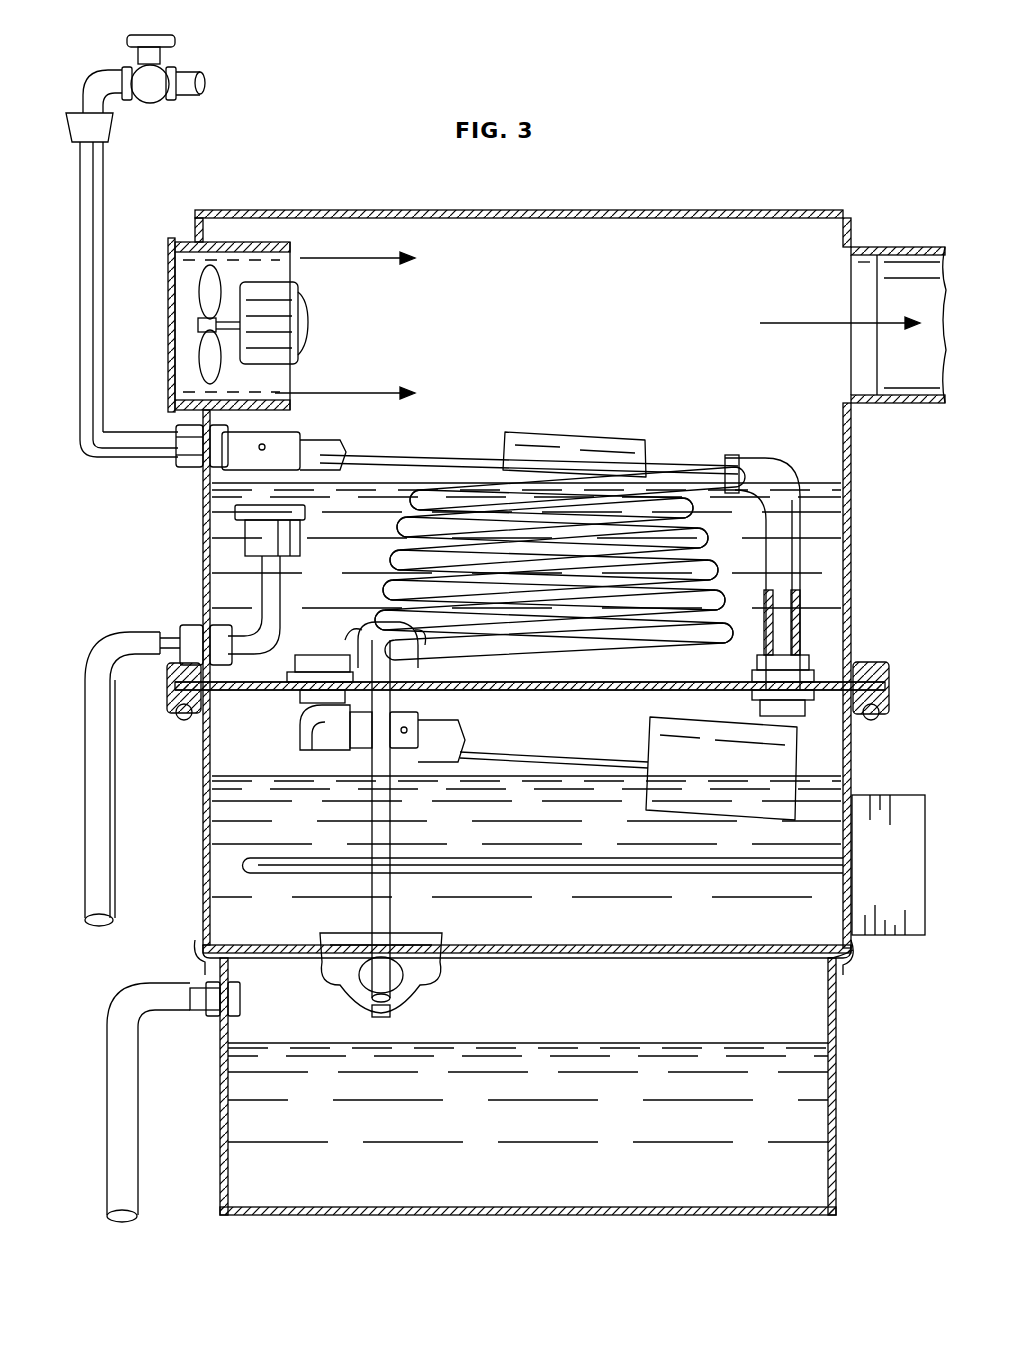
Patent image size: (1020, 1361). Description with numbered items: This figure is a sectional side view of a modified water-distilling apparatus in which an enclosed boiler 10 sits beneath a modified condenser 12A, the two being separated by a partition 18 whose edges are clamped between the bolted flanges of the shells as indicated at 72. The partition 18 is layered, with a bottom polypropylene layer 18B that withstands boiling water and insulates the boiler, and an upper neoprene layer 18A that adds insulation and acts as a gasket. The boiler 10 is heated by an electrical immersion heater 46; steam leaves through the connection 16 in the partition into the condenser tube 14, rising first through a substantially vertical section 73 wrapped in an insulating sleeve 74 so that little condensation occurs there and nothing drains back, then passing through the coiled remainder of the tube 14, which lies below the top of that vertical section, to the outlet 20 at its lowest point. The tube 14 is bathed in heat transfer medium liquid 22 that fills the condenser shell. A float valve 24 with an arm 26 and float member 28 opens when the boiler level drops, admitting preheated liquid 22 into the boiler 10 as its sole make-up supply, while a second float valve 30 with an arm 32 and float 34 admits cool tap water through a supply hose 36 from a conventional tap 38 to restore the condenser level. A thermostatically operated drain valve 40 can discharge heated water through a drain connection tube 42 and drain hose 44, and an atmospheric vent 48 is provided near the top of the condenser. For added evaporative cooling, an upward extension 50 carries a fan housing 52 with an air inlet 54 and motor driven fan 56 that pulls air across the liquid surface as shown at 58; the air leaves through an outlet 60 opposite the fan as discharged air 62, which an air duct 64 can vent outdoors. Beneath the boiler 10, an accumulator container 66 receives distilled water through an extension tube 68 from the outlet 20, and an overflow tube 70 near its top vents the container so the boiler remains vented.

The boiler 10 is at (203, 815).
The modified condenser 12A is at (852, 526).
The condenser tube 14 is at (665, 498).
The connection to the boiler 16 is at (748, 705).
The partition member 18 is at (648, 692).
The upper layer of the partition 18A is at (678, 682).
The bottom layer of the partition 18B is at (590, 695).
The outlet of the condenser tube 20 is at (368, 640).
The heat transfer medium liquid 22 is at (832, 488).
The float valve 24 is at (300, 738).
The arm 26 is at (512, 755).
The float member 28 is at (650, 744).
The float valve 30 is at (265, 432).
The arm 32 is at (360, 460).
The float 34 is at (570, 430).
The supply hose 36 is at (98, 190).
The tap 38 is at (176, 80).
The thermostatically operated drain valve 40 is at (235, 514).
The drain connection tube 42 is at (262, 598).
The drain hose 44 is at (108, 655).
The electrical immersion heater 46 is at (640, 873).
The atmospheric vent 48 is at (205, 468).
The upward extension 50 is at (198, 236).
The fan housing 52 is at (252, 240).
The air inlet 54 is at (168, 292).
The motor driven fan 56 is at (200, 360).
The air flow across the liquid surface 58 is at (360, 393).
The outlet 60 is at (870, 372).
The discharged air 62 is at (800, 325).
The air duct 64 is at (900, 247).
The accumulator container 66 is at (220, 1110).
The extension tube 68 is at (372, 905).
The overflow tube 70 is at (107, 1043).
The bolted flange connection 72 is at (888, 704).
The vertical section of the condenser tube 73 is at (798, 628).
The insulating sleeve 74 is at (805, 600).